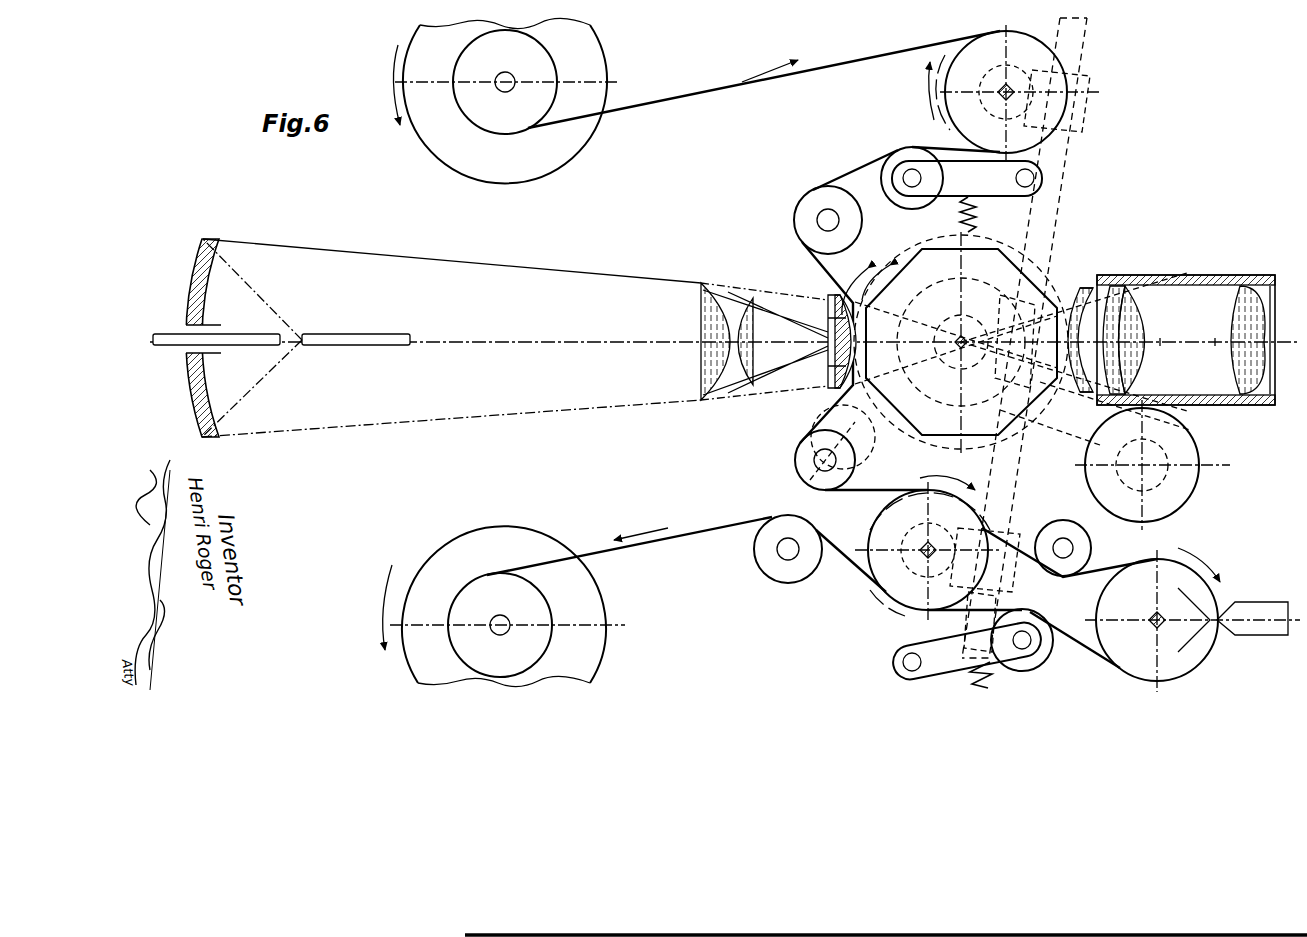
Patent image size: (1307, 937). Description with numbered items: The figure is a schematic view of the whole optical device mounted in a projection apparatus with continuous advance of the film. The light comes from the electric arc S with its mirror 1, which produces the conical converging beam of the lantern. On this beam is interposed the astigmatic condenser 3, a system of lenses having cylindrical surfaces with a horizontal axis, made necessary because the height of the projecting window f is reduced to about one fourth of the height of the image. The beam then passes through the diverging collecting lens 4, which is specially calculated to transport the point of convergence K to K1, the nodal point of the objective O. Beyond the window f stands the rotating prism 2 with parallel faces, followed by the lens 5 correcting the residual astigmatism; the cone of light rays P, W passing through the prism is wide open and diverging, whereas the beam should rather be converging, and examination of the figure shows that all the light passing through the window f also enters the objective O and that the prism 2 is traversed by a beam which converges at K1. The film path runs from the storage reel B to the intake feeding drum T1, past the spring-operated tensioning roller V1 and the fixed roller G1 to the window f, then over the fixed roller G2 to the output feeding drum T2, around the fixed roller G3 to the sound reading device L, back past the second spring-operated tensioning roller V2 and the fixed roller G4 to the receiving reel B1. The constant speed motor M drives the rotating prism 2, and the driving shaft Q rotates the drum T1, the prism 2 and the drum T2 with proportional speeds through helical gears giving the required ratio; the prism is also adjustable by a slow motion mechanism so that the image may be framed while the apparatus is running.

The mirror 1 is at (207, 288).
The electric arc S is at (281, 338).
The astigmatic condenser 3 is at (706, 383).
The diverging collecting lens 4 is at (836, 352).
The point of convergence K is at (854, 341).
The window f is at (855, 288).
The fixed roller G1 is at (808, 203).
The spring-operated tensioning roller V1 is at (905, 162).
The intake feeding drum T1 is at (1014, 92).
The driving shaft Q is at (1060, 182).
The rotating prism 2 is at (998, 265).
The lens correcting the residual astigmatism 5 is at (1082, 290).
The cone of light rays W is at (1108, 272).
The objective O is at (1190, 295).
The nodal point of the objective K1 is at (1187, 333).
The cone of light rays P is at (1095, 413).
The constant speed motor M is at (1152, 465).
The fixed roller G2 is at (795, 461).
The fixed roller G3 is at (1088, 550).
The fixed roller G4 is at (784, 572).
The output feeding drum T2 is at (927, 548).
The spring-operated tensioning roller V2 is at (1044, 660).
The sound reading device L is at (1270, 605).
The storage reel B is at (506, 100).
The receiving reel B1 is at (504, 606).